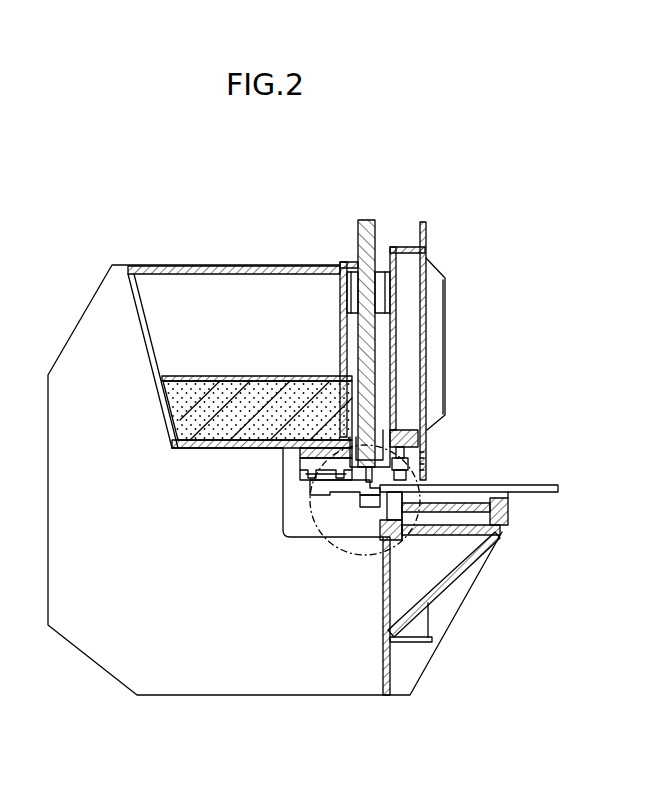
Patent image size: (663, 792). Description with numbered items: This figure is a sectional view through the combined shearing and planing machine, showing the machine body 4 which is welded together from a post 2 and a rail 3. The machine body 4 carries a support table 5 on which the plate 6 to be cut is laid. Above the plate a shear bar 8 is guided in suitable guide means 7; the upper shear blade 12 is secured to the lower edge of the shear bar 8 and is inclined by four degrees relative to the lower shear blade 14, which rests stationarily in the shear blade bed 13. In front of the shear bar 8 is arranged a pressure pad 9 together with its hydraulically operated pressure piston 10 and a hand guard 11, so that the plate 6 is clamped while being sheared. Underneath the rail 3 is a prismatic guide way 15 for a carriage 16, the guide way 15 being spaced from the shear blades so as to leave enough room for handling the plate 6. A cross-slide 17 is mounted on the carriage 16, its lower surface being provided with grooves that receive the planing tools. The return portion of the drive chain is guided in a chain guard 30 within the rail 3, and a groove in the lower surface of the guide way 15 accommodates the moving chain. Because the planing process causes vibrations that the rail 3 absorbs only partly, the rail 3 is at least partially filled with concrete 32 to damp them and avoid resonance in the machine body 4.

The post 2 is at (280, 695).
The rail 3 is at (128, 335).
The machine body 4 is at (92, 690).
The support table 5 is at (505, 518).
The plate 6 is at (540, 485).
The guide means 7 is at (405, 395).
The shear bar 8 is at (366, 228).
The pressure pad 9 is at (405, 262).
The pressure piston 10 is at (412, 462).
The hand guard 11 is at (425, 470).
The upper shear blade 12 is at (410, 440).
The shear blade bed 13 is at (382, 522).
The lower shear blade 14 is at (372, 502).
The prismatic guide way 15 is at (302, 462).
The carriage 16 is at (306, 472).
The cross-slide 17 is at (312, 488).
The chain guard 30 is at (300, 450).
The material 32 is at (230, 400).